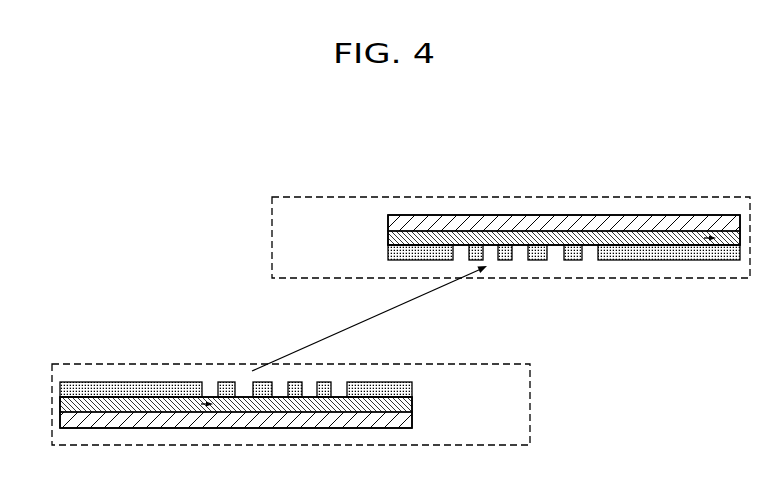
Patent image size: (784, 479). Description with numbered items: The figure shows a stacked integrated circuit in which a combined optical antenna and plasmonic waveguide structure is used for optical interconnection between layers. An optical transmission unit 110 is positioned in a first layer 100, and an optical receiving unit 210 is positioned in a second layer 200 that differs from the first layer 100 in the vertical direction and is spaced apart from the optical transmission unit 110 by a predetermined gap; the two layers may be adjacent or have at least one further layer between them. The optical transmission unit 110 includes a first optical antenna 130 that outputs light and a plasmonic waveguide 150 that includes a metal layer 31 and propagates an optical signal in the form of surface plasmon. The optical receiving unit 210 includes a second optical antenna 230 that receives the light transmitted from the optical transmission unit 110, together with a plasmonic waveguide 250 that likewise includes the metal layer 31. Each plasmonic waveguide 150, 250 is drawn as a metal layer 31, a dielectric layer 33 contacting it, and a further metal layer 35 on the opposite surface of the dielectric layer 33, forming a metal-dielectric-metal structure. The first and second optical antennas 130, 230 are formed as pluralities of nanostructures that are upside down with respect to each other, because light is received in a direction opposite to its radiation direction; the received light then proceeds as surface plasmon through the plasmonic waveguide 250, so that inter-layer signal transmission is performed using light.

The first layer 100 is at (530, 418).
The optical transmission unit 110 is at (58, 366).
The first optical antenna 130 is at (336, 367).
The plasmonic waveguide 150 is at (469, 377).
The second layer 200 is at (680, 196).
The optical receiving unit 210 is at (388, 199).
The second optical antenna 230 is at (563, 270).
The plasmonic waveguide 250 is at (334, 203).
The metal layer 31 is at (388, 250).
The dielectric layer 33 is at (388, 238).
The metal layer 35 is at (388, 219).